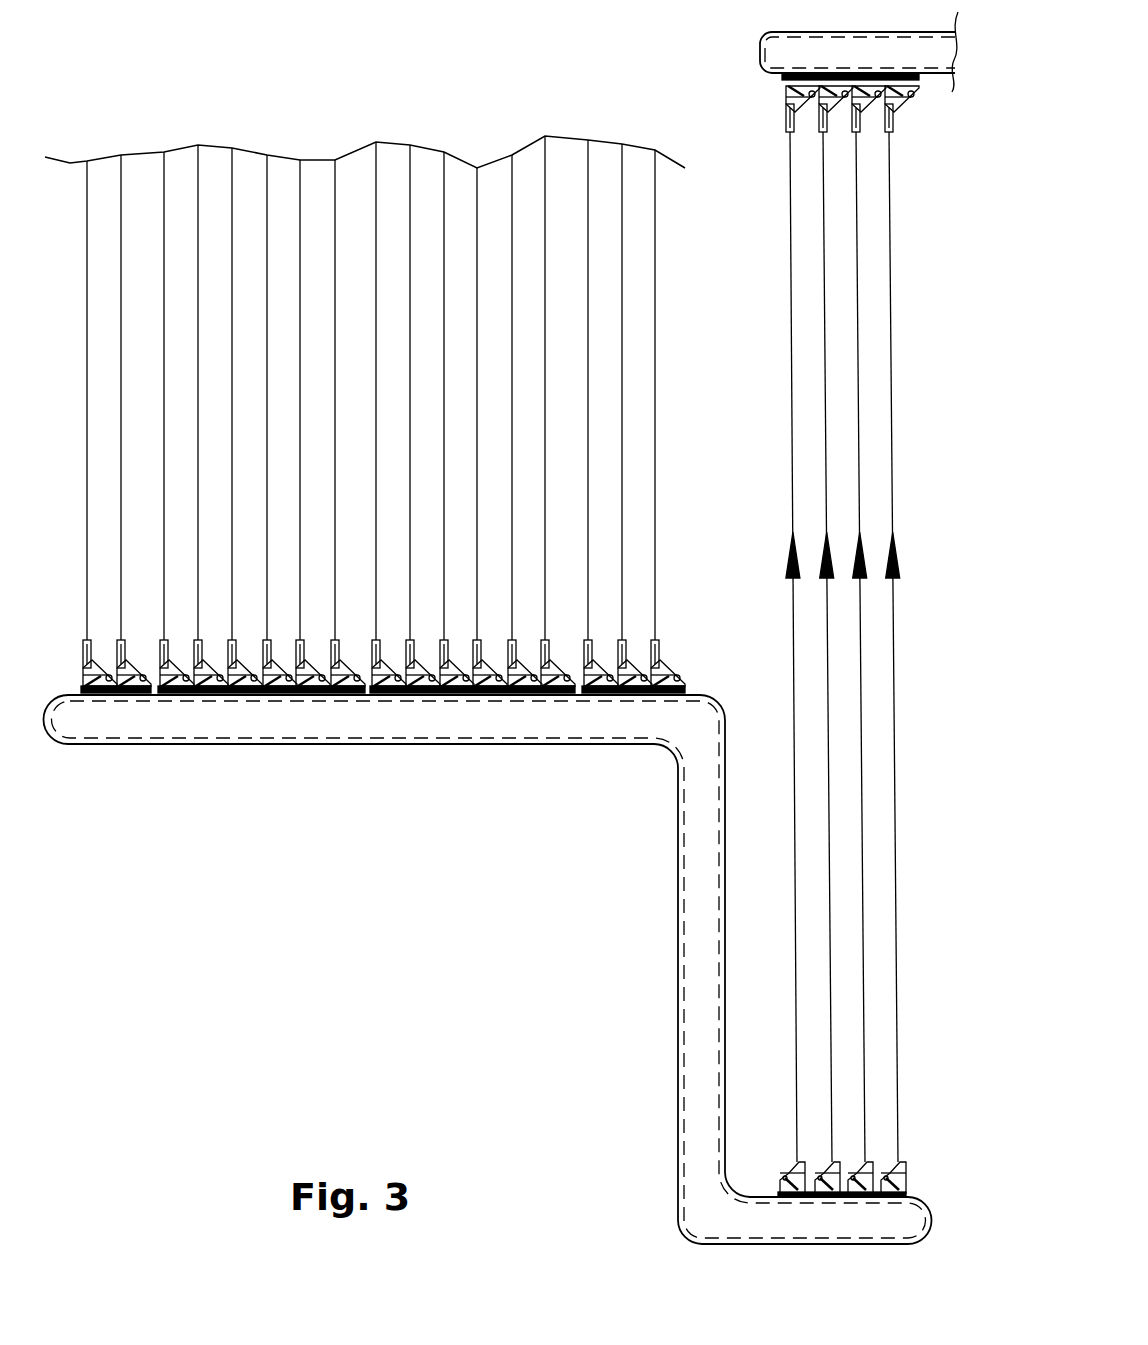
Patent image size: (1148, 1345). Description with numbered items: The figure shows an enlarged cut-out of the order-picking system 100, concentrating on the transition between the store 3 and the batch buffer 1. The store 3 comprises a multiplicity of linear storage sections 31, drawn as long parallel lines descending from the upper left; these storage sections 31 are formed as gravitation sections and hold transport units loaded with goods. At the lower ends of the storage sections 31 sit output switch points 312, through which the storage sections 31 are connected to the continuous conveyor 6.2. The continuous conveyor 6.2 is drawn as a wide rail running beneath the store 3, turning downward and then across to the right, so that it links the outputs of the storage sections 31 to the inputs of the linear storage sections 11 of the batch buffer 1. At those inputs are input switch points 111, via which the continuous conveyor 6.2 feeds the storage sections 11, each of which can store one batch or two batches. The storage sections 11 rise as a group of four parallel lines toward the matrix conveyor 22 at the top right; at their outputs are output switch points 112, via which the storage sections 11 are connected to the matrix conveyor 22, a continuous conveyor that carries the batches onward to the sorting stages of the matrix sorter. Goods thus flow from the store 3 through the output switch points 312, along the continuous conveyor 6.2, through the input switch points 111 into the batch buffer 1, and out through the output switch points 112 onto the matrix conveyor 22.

The order-picking system 100 is at (357, 77).
The store 3 is at (175, 114).
The linear storage sections 31 is at (657, 311).
The output switch points 312 is at (688, 630).
The continuous conveyor 6.2 is at (493, 745).
The batch buffer 1 is at (774, 444).
The matrix conveyor 22 is at (760, 48).
The output switch points 112 is at (748, 90).
The linear storage sections 11 is at (897, 950).
The input switch points 111 is at (775, 1154).